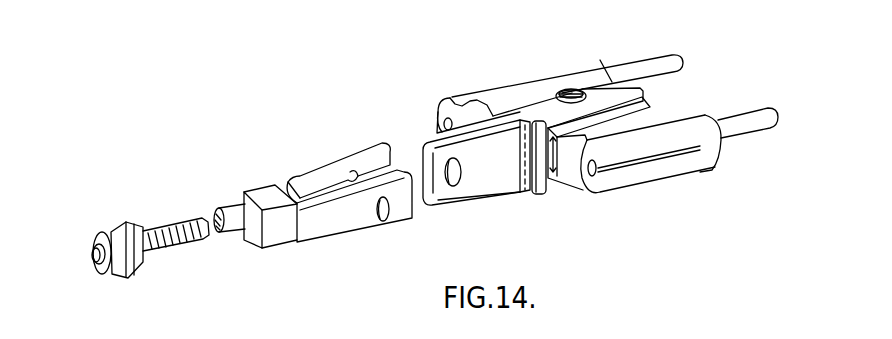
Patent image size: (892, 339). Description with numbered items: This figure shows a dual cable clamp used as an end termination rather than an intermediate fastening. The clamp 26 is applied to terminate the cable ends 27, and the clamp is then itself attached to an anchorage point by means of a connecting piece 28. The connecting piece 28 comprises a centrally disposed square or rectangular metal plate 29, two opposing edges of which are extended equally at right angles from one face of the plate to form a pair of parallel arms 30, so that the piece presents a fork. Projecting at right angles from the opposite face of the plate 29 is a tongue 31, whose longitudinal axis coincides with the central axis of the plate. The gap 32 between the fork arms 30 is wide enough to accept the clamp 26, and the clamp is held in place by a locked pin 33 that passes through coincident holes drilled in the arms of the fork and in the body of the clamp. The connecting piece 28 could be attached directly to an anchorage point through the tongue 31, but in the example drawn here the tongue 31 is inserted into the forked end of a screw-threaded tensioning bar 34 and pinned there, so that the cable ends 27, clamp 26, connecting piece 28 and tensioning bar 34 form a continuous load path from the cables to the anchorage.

The clamp 26 is at (528, 92).
The cable ends 27 is at (760, 118).
The connecting piece 28 is at (520, 110).
The metal plate 29 is at (538, 165).
The parallel arms 30 is at (614, 102).
The tongue 31 is at (477, 188).
The gap 32 is at (558, 172).
The locked pin 33 is at (568, 93).
The screw-threaded tensioning bar 34 is at (237, 213).